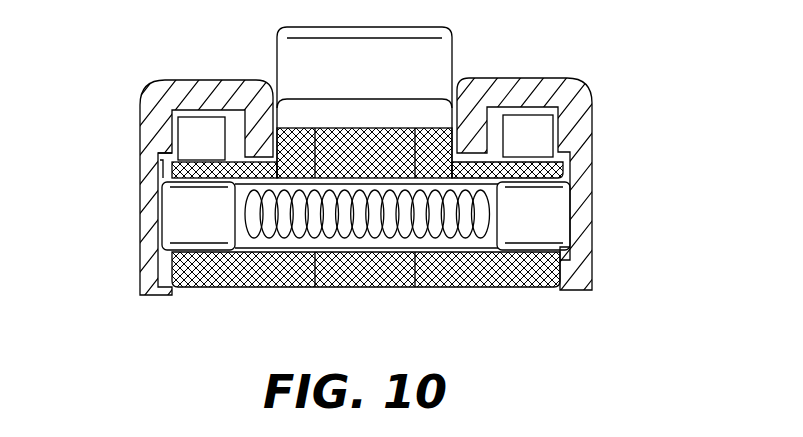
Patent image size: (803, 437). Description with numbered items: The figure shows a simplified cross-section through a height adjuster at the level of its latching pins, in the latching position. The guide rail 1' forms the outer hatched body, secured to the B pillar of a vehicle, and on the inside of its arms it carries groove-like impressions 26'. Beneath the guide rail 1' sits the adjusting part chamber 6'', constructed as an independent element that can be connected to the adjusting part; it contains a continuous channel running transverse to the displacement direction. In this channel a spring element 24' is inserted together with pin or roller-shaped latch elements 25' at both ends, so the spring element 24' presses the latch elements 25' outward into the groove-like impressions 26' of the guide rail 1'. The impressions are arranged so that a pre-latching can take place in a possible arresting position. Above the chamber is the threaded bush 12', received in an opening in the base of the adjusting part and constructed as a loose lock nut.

The guide rail 1' is at (401, 185).
The threaded bush 12' is at (364, 102).
The adjusting part chamber 6'' is at (372, 230).
The latch elements 25' is at (366, 216).
The spring element 24' is at (367, 259).
The groove-like impressions 26' is at (373, 223).